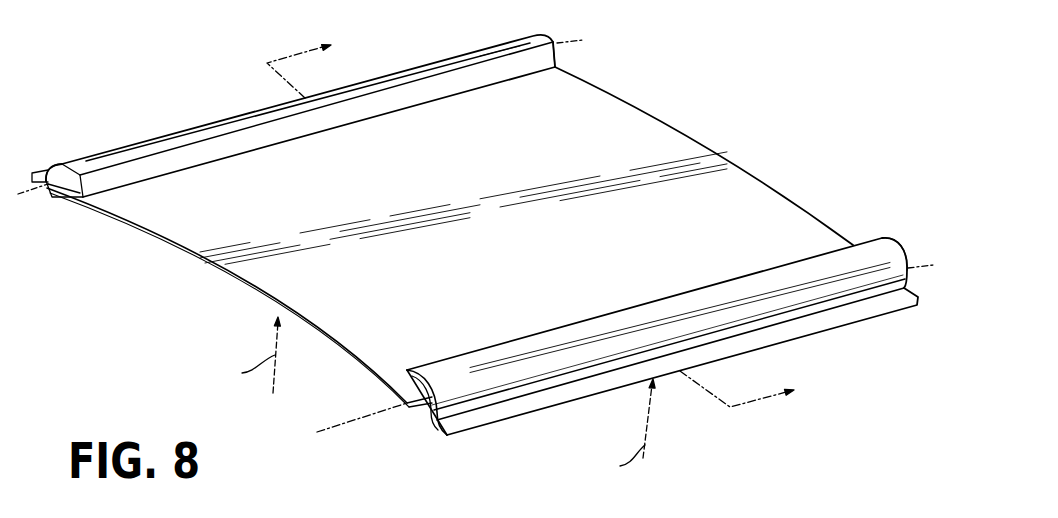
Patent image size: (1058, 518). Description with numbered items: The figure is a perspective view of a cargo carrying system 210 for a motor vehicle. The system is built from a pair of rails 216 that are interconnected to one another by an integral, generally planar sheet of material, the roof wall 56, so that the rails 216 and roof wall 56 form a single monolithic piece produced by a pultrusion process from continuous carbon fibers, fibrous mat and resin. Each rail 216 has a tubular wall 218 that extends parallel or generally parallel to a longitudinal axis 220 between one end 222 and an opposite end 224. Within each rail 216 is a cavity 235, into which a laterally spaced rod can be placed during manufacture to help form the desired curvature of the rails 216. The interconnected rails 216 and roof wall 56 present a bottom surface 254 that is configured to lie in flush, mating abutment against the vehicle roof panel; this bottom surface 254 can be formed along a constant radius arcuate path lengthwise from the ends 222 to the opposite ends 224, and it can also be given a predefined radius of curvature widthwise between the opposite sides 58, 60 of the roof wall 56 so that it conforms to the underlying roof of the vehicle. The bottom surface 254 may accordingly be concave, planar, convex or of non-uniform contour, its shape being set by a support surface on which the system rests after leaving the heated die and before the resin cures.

The cargo carrying system 210 is at (781, 72).
The roof wall 56 is at (653, 132).
The side of the roof wall 58 is at (498, 415).
The side of the roof wall 60 is at (47, 173).
The rail 216 is at (147, 142).
The tubular wall 218 is at (201, 125).
The longitudinal axis 220 is at (21, 190).
The end 222 is at (50, 190).
The opposite end 224 is at (558, 47).
The cavity 235 is at (67, 197).
The bottom surface 254 is at (222, 270).